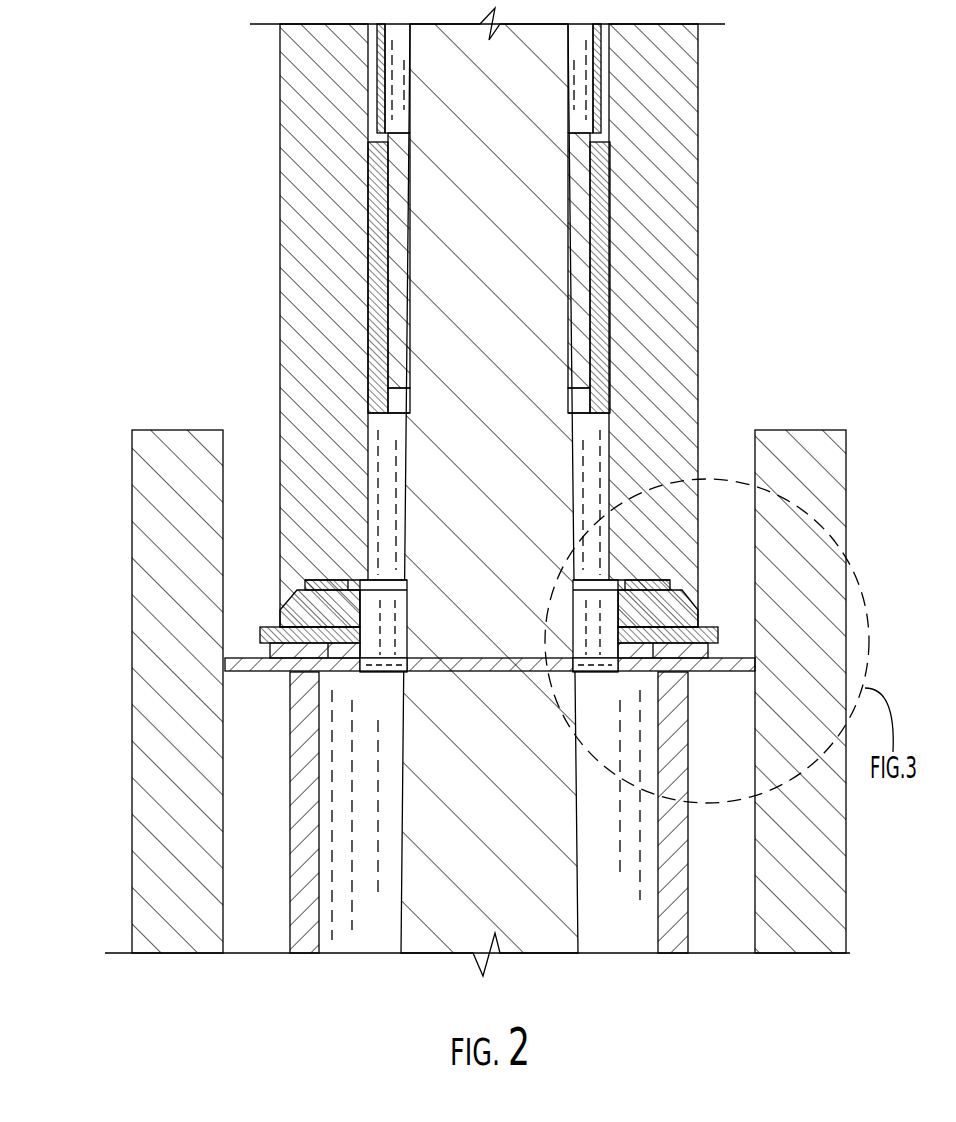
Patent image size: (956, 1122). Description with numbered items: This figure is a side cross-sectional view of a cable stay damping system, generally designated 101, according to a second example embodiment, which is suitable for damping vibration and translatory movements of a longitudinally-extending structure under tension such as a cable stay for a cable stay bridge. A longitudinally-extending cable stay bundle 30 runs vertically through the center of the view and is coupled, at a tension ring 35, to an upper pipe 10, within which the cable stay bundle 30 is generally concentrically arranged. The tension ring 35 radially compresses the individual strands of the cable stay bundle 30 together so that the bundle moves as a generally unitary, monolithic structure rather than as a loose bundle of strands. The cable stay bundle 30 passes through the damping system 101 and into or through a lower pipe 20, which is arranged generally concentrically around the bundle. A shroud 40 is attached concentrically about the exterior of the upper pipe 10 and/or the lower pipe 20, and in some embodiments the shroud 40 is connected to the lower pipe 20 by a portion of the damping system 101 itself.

The upper pipe 10 is at (280, 283).
The lower pipe 20 is at (290, 925).
The cable stay bundle 30 is at (508, 481).
The tension ring 35 is at (630, 317).
The shroud 40 is at (182, 430).
The damping system 101 is at (80, 738).